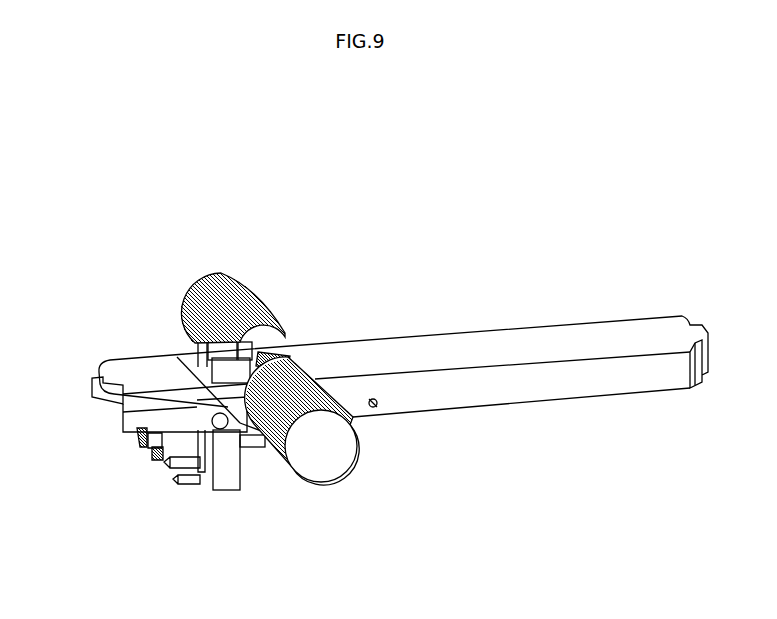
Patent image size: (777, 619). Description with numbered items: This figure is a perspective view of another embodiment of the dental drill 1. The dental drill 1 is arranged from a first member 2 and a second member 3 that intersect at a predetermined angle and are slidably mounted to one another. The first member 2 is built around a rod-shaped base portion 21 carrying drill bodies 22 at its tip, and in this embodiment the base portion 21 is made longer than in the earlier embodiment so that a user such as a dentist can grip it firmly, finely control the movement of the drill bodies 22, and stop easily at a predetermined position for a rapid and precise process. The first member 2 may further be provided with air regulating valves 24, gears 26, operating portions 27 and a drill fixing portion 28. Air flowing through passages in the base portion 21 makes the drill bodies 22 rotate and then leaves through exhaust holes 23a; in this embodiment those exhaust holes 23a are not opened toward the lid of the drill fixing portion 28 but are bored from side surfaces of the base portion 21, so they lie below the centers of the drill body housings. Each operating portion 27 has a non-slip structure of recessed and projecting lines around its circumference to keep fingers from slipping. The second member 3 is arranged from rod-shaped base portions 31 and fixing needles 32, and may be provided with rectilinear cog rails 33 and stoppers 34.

The dental drill 1 is at (102, 165).
The first member 2 is at (102, 296).
The second member 3 is at (300, 556).
The base portion 21 is at (540, 345).
The drill bodies 22 is at (143, 447).
The exhaust holes 23a is at (140, 424).
The air regulating valves 24 is at (378, 409).
The gears 26 is at (268, 353).
The operating portions 27 is at (240, 294).
The drill fixing portion 28 is at (148, 375).
The base portions 31 is at (207, 352).
The fixing needles 32 is at (165, 467).
The rectilinear cog rails 33 is at (243, 343).
The stoppers 34 is at (262, 444).